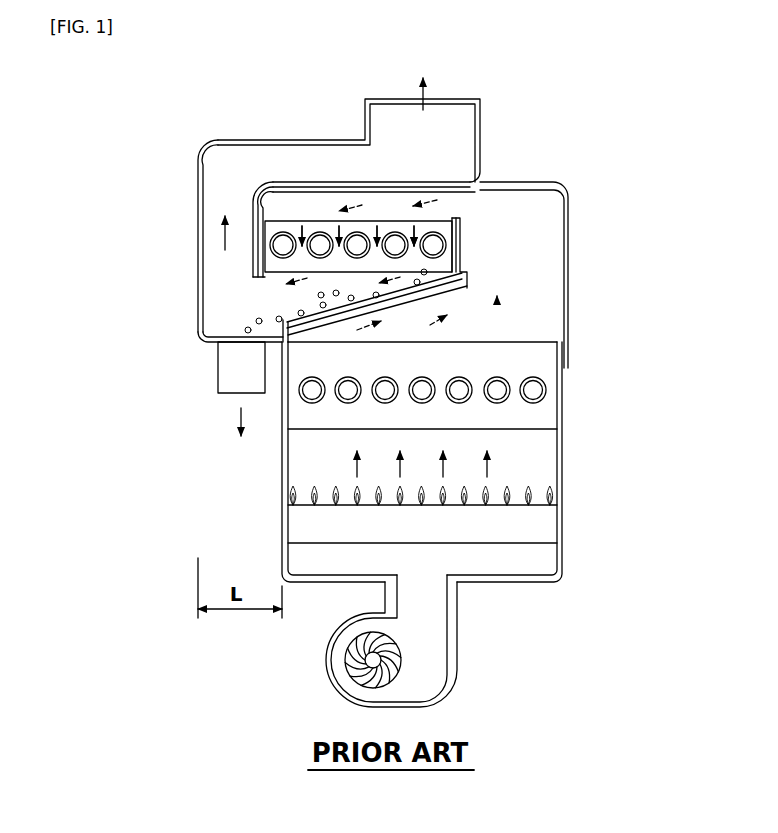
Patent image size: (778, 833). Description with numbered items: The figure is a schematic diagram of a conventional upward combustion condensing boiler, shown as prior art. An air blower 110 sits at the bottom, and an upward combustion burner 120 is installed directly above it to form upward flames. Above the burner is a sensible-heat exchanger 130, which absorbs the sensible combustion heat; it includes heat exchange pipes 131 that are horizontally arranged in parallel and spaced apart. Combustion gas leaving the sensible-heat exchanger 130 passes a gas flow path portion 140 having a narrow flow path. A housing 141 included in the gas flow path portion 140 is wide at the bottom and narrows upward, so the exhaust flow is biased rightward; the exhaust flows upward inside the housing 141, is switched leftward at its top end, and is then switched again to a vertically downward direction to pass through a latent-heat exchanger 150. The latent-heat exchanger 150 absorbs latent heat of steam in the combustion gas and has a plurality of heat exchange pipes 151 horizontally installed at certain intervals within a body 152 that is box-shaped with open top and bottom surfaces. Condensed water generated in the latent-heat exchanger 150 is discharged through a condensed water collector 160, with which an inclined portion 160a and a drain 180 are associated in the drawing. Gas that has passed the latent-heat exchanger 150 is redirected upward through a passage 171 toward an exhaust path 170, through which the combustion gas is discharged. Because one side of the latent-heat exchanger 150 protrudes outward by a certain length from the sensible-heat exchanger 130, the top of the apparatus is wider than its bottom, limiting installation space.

The air blower 110 is at (457, 638).
The upward combustion burner 120 is at (552, 525).
The sensible-heat exchanger 130 is at (463, 462).
The heat exchange pipes 131 is at (547, 384).
The gas flow path portion 140 is at (540, 250).
The housing 141 is at (453, 308).
The latent-heat exchanger 150 is at (451, 205).
The heat exchange pipes 151 is at (448, 245).
The body 152 is at (253, 226).
The condensed water collector 160 is at (282, 318).
The upright portion of partition plate 160a is at (458, 206).
The exhaust path 170 is at (290, 160).
The exhaust passage 171 is at (253, 266).
The condensate drain pipe 180 is at (283, 352).